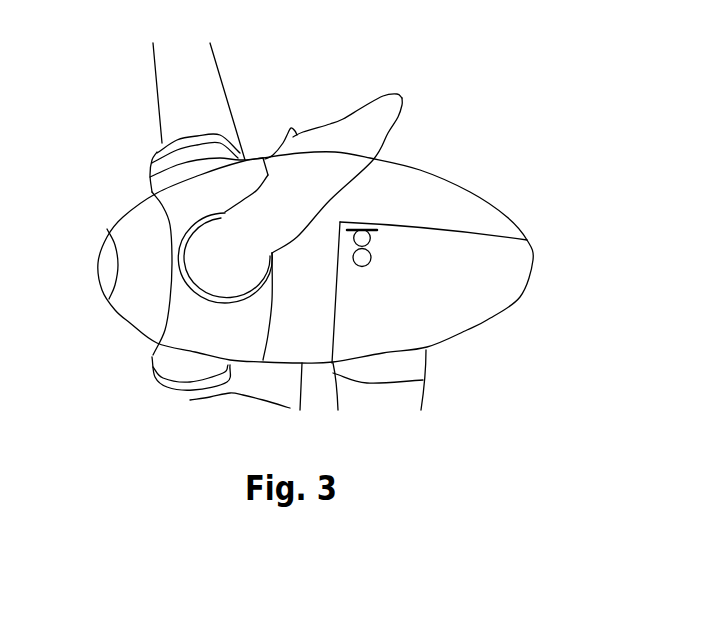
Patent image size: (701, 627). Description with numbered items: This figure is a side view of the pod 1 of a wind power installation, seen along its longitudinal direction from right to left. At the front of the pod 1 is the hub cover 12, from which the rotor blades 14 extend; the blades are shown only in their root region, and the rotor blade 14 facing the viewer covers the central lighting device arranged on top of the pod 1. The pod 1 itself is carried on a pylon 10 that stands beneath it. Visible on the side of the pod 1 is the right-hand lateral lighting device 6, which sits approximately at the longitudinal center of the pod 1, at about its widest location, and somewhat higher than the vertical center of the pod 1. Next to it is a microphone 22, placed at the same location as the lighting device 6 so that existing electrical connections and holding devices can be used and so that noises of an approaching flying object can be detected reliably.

The pod 1 is at (447, 127).
The right-hand lateral lighting device 6 is at (387, 265).
The tower 10 is at (400, 398).
The hub cover 12 is at (125, 228).
The rotor blades 14 is at (200, 69).
The microphone 22 is at (373, 238).